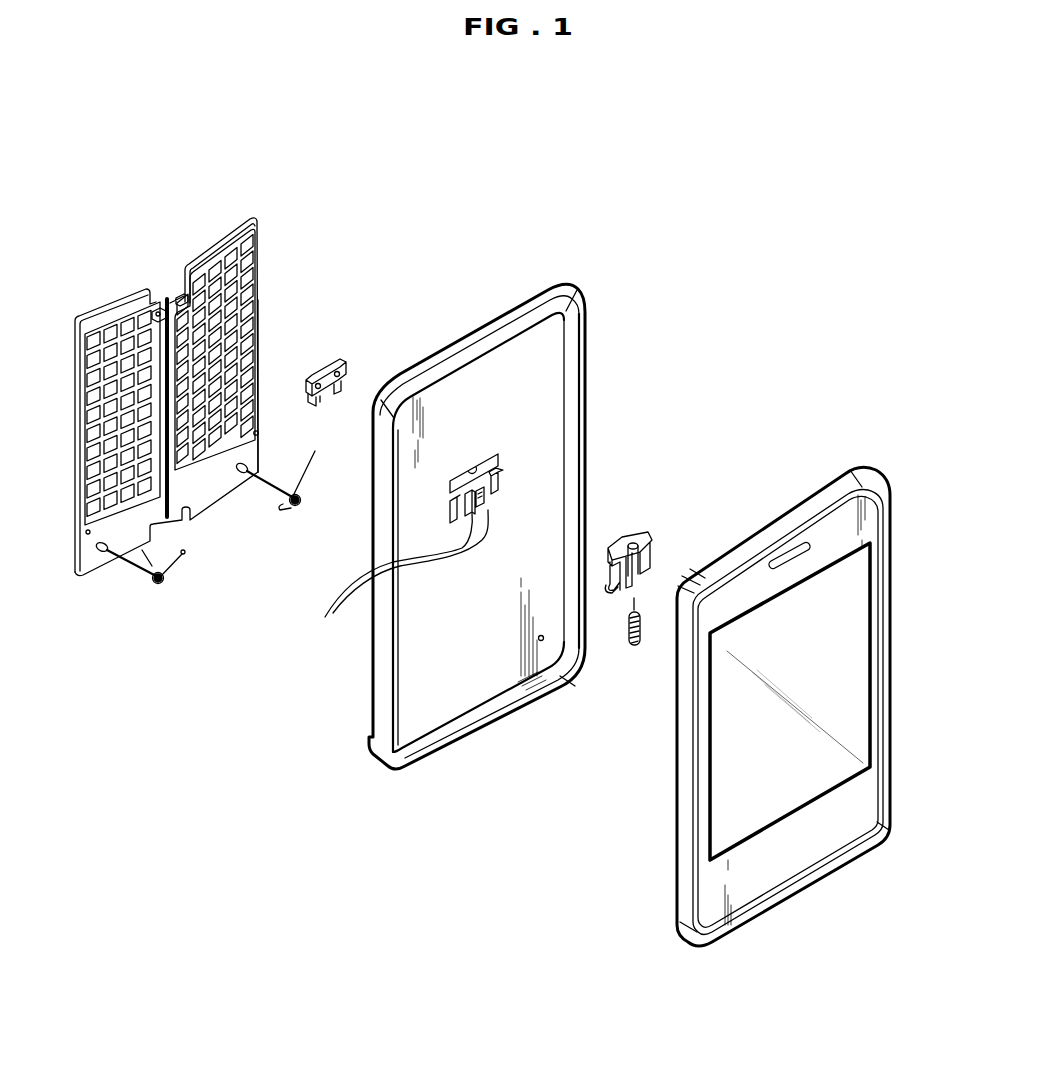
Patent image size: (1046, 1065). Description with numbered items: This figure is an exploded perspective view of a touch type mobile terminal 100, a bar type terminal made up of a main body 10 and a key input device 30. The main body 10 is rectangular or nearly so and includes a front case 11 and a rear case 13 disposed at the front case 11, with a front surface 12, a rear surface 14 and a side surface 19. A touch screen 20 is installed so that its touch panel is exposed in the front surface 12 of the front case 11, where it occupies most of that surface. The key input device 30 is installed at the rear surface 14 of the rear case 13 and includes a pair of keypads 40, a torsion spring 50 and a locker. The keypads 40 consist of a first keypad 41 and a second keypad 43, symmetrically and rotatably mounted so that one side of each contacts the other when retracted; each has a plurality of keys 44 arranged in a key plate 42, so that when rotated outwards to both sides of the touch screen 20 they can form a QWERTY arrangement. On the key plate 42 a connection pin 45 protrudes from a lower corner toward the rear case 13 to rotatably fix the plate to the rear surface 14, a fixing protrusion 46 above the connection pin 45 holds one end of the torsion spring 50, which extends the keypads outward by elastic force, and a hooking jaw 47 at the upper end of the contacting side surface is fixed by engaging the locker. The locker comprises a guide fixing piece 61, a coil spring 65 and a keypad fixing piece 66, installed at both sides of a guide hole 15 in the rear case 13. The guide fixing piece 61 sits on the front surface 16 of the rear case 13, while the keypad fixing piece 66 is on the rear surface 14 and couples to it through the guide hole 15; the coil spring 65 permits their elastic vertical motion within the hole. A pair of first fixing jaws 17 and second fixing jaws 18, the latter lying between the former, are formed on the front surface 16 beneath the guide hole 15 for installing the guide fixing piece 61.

The touch type mobile terminal 100 is at (766, 158).
The main body 10 is at (493, 862).
The front case 11 is at (668, 833).
The front surface 12 is at (858, 807).
The rear case 13 is at (446, 760).
The rear surface 14 is at (373, 691).
The guide hole 15 is at (472, 476).
The front surface of the rear case 16 is at (553, 388).
The first fixing jaws 17 is at (506, 482).
The second fixing jaws 18 is at (325, 617).
The side surface 19 is at (677, 772).
The touch screen 20 is at (860, 631).
The key input device 30 is at (95, 189).
The keypad 40 is at (217, 233).
The first keypad 41 is at (260, 294).
The key plate 42 is at (259, 230).
The second keypad 43 is at (108, 328).
The keys 44 is at (247, 397).
The connection pin 45 is at (105, 553).
The fixing protrusion 46 is at (259, 434).
The hooking jaw 47 is at (160, 304).
The torsion spring 50 is at (160, 583).
The guide fixing piece 61 is at (636, 531).
The coil spring 65 is at (632, 645).
The keypad fixing piece 66 is at (344, 362).